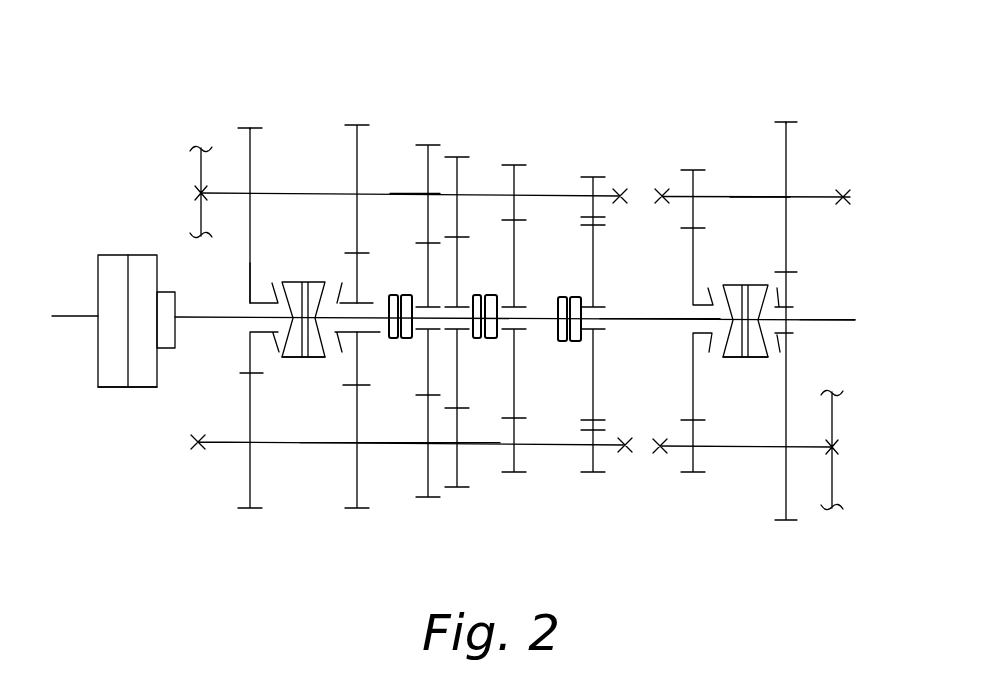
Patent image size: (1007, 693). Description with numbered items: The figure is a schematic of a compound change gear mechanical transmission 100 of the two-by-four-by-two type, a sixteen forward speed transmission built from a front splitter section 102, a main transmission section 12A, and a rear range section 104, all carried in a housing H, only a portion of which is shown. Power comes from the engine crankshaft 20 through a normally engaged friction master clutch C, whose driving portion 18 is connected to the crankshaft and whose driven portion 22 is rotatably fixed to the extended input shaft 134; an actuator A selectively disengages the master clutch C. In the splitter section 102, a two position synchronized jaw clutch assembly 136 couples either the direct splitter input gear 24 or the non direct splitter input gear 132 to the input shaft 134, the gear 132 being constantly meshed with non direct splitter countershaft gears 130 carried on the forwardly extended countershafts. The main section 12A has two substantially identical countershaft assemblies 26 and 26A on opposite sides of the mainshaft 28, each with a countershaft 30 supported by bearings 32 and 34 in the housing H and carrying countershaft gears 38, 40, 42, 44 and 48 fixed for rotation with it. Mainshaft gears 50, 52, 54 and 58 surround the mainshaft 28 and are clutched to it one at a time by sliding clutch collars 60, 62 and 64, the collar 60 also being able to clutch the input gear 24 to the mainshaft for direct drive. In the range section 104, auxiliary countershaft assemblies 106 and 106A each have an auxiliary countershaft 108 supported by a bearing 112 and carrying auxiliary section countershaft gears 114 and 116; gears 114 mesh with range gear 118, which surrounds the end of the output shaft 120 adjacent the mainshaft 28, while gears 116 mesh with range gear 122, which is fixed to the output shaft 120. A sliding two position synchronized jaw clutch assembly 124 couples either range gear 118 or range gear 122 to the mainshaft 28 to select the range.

The input or driving portion 18 is at (112, 255).
The engine crankshaft 20 is at (75, 317).
The driven portion 22 is at (140, 255).
The actuator A is at (169, 291).
The friction master clutch C is at (125, 390).
The housing H is at (201, 172).
The main transmission section 12A is at (472, 185).
The input gear 24 is at (250, 283).
The countershaft assembly 26 is at (377, 193).
The countershaft assembly 26A is at (397, 447).
The mainshaft 28 is at (657, 323).
The countershaft 30 is at (418, 197).
The bearing 32 is at (192, 447).
The bearing 34 is at (632, 450).
The countershaft gear 38 is at (355, 470).
The countershaft gear 40 is at (428, 480).
The countershaft gear 42 is at (457, 470).
The countershaft gear 44 is at (513, 453).
The countershaft gear 48 is at (590, 460).
The mainshaft gear 50 is at (427, 370).
The mainshaft gear 52 is at (458, 378).
The mainshaft gear 54 is at (512, 406).
The mainshaft gear 58 is at (590, 372).
The sliding clutch collar 60 is at (390, 335).
The sliding clutch collar 62 is at (495, 296).
The sliding clutch collar 64 is at (558, 297).
The compound change gear mechanical transmission 100 is at (646, 186).
The splitter section 102 is at (297, 129).
The range section 104 is at (752, 134).
The auxiliary countershaft assembly 106 is at (741, 195).
The auxiliary countershaft assembly 106A is at (738, 448).
The auxiliary countershaft 108 is at (763, 200).
The bearing 112 is at (851, 192).
The auxiliary section countershaft gear 114 is at (700, 183).
The auxiliary section countershaft gear 116 is at (786, 142).
The auxiliary section range gear 118 is at (692, 293).
The output shaft 120 is at (810, 318).
The auxiliary section range gear 122 is at (780, 285).
The synchronized jaw clutch assembly 124 is at (757, 358).
The non direct splitter countershaft gear 130 is at (250, 237).
The non direct splitter input gear 132 is at (230, 420).
The extended input shaft 134 is at (262, 263).
The synchronized jaw clutch assembly 136 is at (318, 357).